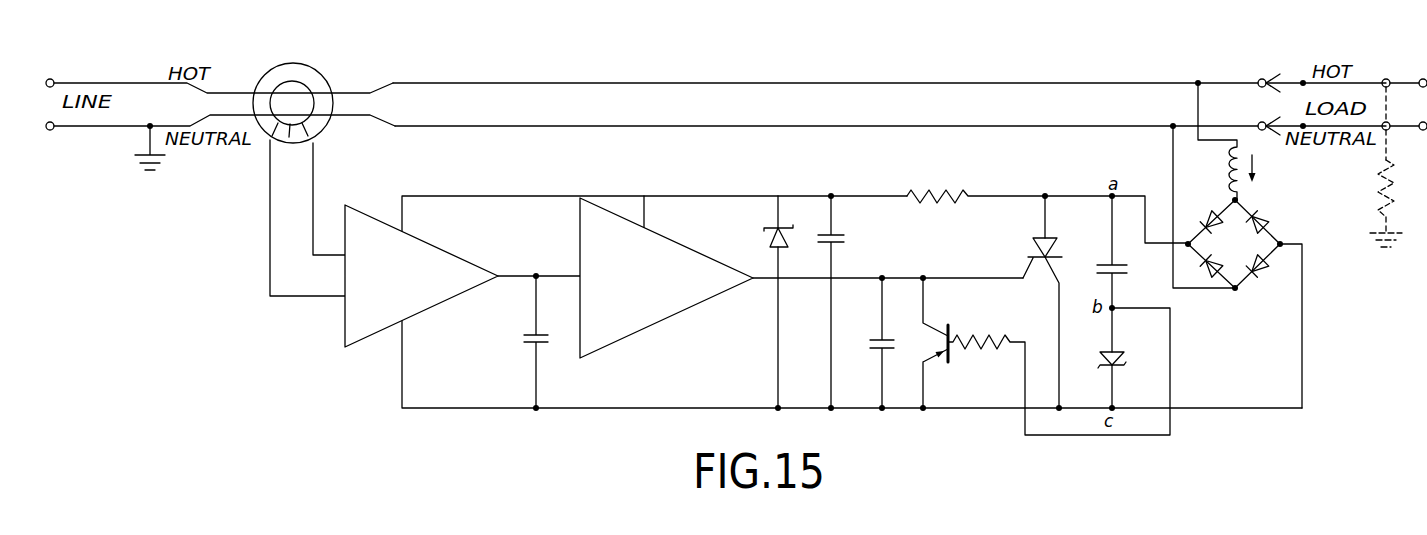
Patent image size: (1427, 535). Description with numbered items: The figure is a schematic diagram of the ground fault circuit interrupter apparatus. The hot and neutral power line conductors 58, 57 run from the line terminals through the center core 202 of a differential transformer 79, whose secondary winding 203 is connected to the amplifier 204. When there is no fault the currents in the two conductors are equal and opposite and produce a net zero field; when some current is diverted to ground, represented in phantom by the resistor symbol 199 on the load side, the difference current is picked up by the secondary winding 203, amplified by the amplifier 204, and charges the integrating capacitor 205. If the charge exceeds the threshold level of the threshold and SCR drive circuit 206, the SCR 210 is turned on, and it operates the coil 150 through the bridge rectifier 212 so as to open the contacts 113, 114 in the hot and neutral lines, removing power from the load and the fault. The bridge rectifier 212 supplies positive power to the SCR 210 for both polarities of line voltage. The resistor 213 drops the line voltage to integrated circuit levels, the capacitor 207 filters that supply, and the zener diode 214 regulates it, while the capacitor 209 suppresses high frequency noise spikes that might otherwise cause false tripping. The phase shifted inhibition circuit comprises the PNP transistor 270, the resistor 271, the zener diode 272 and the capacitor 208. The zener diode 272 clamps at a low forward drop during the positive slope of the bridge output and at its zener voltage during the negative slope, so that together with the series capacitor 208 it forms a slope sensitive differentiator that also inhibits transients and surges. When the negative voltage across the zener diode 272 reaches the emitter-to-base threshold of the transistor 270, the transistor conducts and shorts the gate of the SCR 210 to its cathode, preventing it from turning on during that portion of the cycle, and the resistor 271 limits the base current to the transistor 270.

The differential current transformer (toroid) 79 is at (318, 65).
The hot line conductor 58 is at (473, 80).
The neutral line conductor 57 is at (461, 130).
The center core 202 is at (318, 128).
The secondary winding 203 is at (273, 132).
The amplifier 204 is at (419, 238).
The integrating capacitor 205 is at (529, 346).
The threshold and SCR drive circuit 206 is at (657, 323).
The zener diode 214 is at (768, 236).
The capacitor 207 is at (838, 239).
The capacitor 209 is at (873, 347).
The resistor 213 is at (945, 188).
The SCR 210 is at (1033, 249).
The PNP transistor 270 is at (942, 328).
The resistor 271 is at (1000, 360).
The capacitor 208 is at (1128, 267).
The zener diode 272 is at (1117, 368).
The bridge rectifier 212 is at (1244, 280).
The trip coil (solenoid) 150 is at (1230, 170).
The resistor symbol 199 is at (1377, 190).
The hot line contact 113 is at (1263, 79).
The neutral line contact 114 is at (1270, 130).